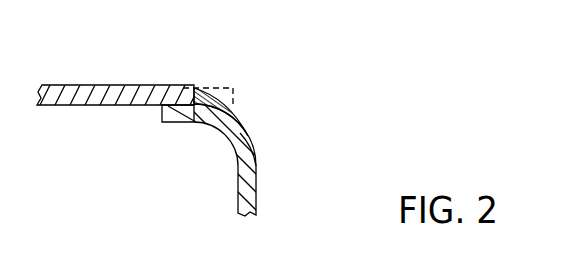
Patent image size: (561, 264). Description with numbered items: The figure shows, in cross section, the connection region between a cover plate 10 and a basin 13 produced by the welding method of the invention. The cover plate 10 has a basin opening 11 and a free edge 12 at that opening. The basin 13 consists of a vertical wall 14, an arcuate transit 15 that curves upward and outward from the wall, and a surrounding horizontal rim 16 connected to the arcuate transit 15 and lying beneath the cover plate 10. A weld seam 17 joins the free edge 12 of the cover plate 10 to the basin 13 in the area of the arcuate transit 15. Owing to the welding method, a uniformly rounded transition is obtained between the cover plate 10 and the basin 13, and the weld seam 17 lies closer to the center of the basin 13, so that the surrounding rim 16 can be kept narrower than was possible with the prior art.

The cover plate 10 is at (68, 86).
The basin opening 11 is at (264, 97).
The free edge 12 is at (232, 92).
The basin 13 is at (219, 143).
The vertical wall 14 is at (240, 195).
The arcuate transit 15 is at (244, 160).
The surrounding horizontal rim 16 is at (163, 123).
The weld seam 17 is at (196, 90).